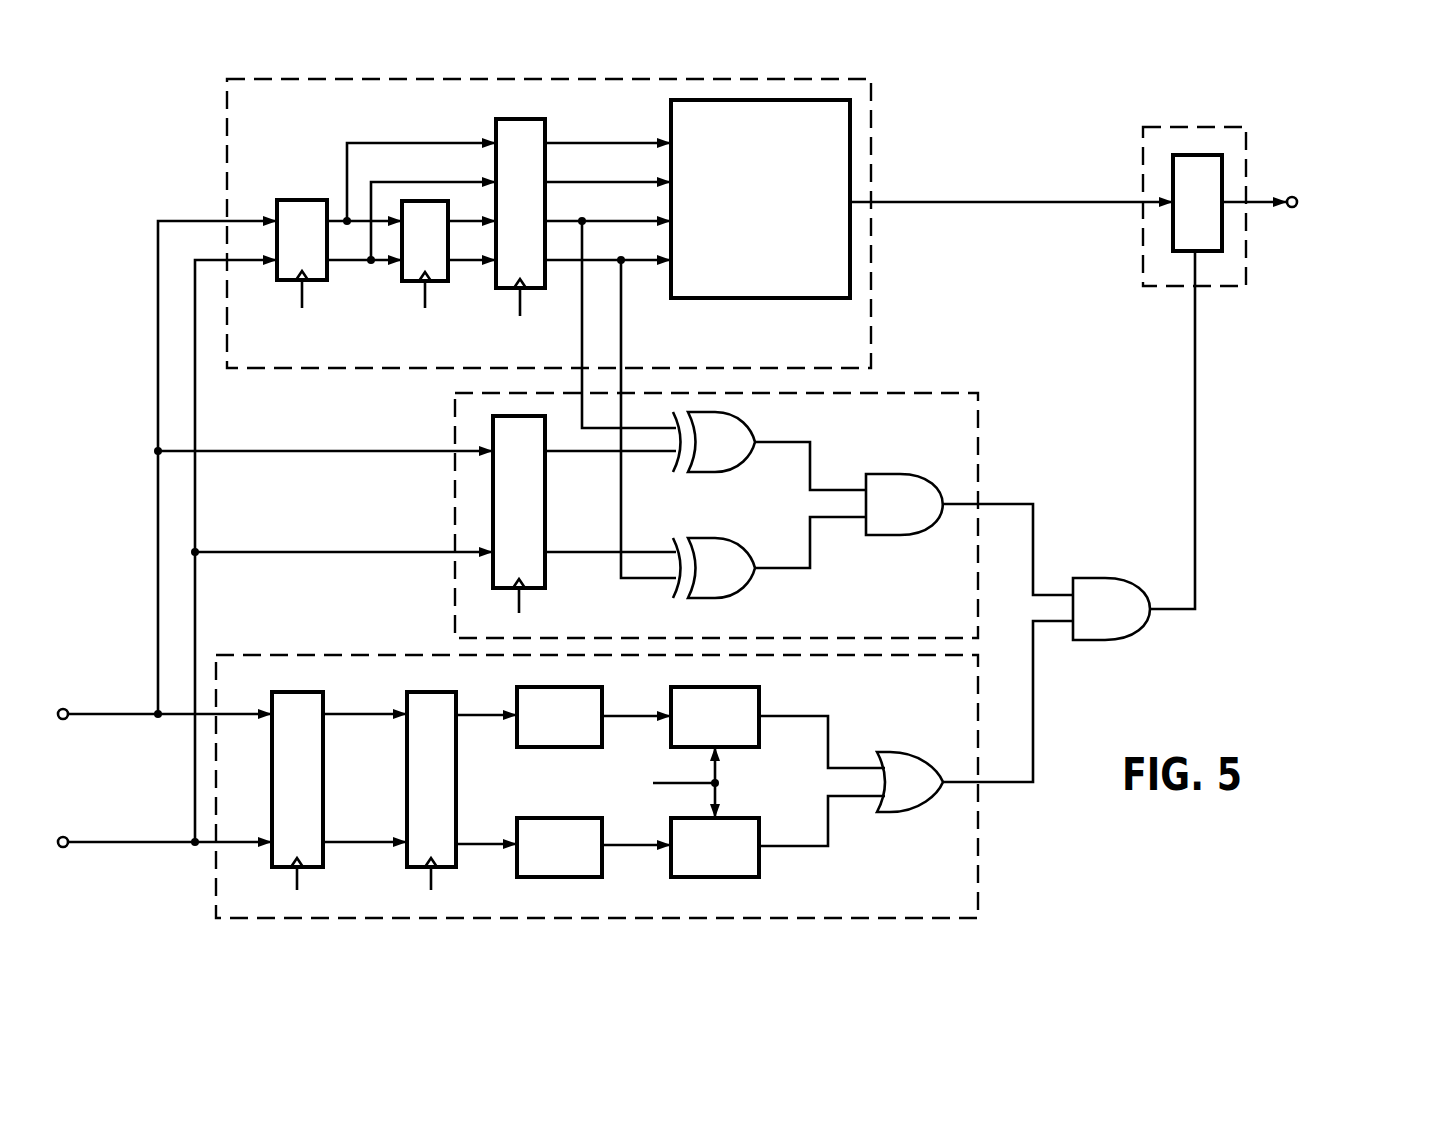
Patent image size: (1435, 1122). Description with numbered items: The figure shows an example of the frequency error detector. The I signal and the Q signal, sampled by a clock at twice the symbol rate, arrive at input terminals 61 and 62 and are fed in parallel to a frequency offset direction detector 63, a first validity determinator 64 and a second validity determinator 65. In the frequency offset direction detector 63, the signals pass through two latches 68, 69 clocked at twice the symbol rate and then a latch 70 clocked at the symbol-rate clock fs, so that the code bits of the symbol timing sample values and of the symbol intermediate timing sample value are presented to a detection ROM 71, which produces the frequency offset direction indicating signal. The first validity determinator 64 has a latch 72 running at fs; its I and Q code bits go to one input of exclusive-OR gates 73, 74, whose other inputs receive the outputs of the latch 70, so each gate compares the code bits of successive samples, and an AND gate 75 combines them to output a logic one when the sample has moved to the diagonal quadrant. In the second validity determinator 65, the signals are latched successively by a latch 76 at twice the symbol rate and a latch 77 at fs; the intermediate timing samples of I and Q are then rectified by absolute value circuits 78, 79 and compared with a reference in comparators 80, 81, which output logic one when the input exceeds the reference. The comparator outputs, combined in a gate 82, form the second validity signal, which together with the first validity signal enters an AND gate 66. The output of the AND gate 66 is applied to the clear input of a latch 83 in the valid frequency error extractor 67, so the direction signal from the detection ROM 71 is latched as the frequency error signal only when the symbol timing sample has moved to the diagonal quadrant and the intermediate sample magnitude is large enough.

The input terminal 61 is at (68, 710).
The input terminal 62 is at (68, 840).
The frequency offset direction detector 63 is at (872, 278).
The first validity determinator 64 is at (978, 425).
The second validity determinator 65 is at (978, 843).
The AND gate 66 is at (1108, 641).
The valid frequency error extractor 67 is at (1143, 188).
The D flip-flop 68 is at (277, 203).
The D flip-flop 69 is at (402, 279).
The latch 70 is at (494, 130).
The detection ROM 71 is at (757, 299).
The latch 72 is at (493, 426).
The exclusive-OR gate 73 is at (690, 474).
The exclusive-OR gate 74 is at (752, 600).
The AND gate 75 is at (897, 474).
The D flip-flop 76 is at (296, 692).
The latch 77 is at (407, 808).
The absolute value circuit 78 is at (557, 748).
The absolute value circuit 79 is at (518, 818).
The comparator 80 is at (762, 712).
The comparator 81 is at (760, 830).
The OR gate 82 is at (905, 813).
The latch 83 is at (1222, 184).